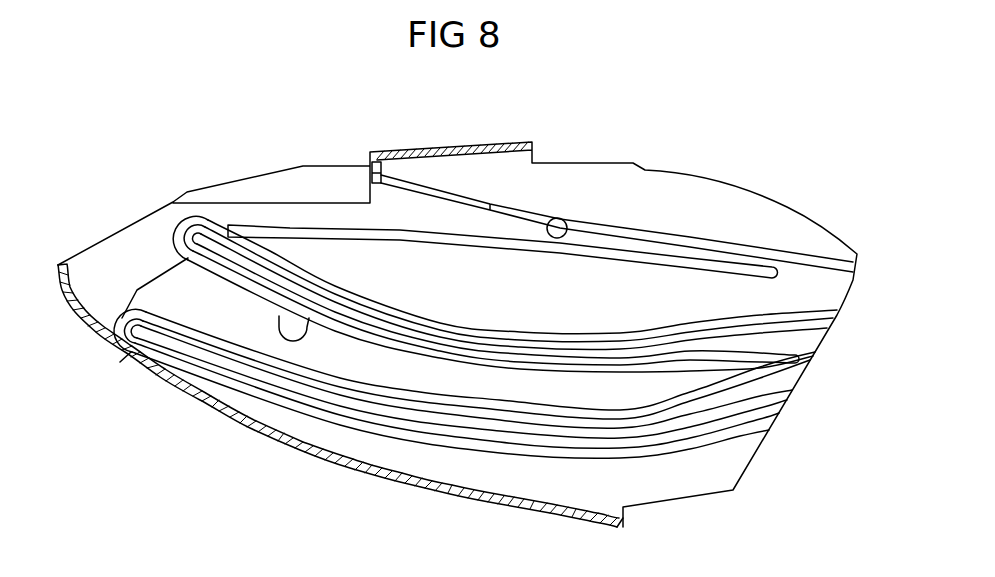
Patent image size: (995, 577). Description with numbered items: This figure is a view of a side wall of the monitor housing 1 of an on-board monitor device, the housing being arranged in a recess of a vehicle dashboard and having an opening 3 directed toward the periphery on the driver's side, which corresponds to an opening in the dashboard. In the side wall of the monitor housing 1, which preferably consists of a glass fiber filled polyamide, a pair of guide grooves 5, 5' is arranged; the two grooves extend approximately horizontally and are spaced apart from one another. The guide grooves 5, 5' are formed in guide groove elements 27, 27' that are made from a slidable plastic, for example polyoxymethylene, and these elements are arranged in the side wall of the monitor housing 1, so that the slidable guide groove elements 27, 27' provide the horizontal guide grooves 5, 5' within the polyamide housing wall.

The monitor housing 1 is at (233, 488).
The opening 3 is at (122, 250).
The guide groove 5 is at (508, 239).
The guide groove element 27 is at (505, 247).
The guide groove 5' is at (467, 442).
The guide groove element 27' is at (464, 442).